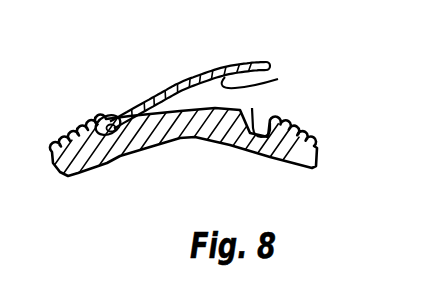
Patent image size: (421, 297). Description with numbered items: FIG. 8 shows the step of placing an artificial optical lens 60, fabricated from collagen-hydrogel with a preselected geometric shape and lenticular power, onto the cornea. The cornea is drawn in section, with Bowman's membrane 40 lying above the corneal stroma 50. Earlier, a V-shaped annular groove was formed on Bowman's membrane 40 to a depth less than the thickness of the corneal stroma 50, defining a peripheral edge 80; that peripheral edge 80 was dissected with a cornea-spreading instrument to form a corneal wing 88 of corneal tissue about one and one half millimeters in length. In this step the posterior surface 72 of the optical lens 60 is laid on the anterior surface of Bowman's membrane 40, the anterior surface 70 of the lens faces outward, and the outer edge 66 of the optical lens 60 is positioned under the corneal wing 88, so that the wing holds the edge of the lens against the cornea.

The Bowman's membrane 40 is at (298, 144).
The corneal stroma 50 is at (213, 144).
The optical lens 60 is at (227, 62).
The outer edge 66 is at (117, 120).
The anterior surface 70 is at (192, 76).
The posterior surface 72 is at (265, 84).
The peripheral edge 80 is at (252, 110).
The corneal wing 88 is at (115, 121).